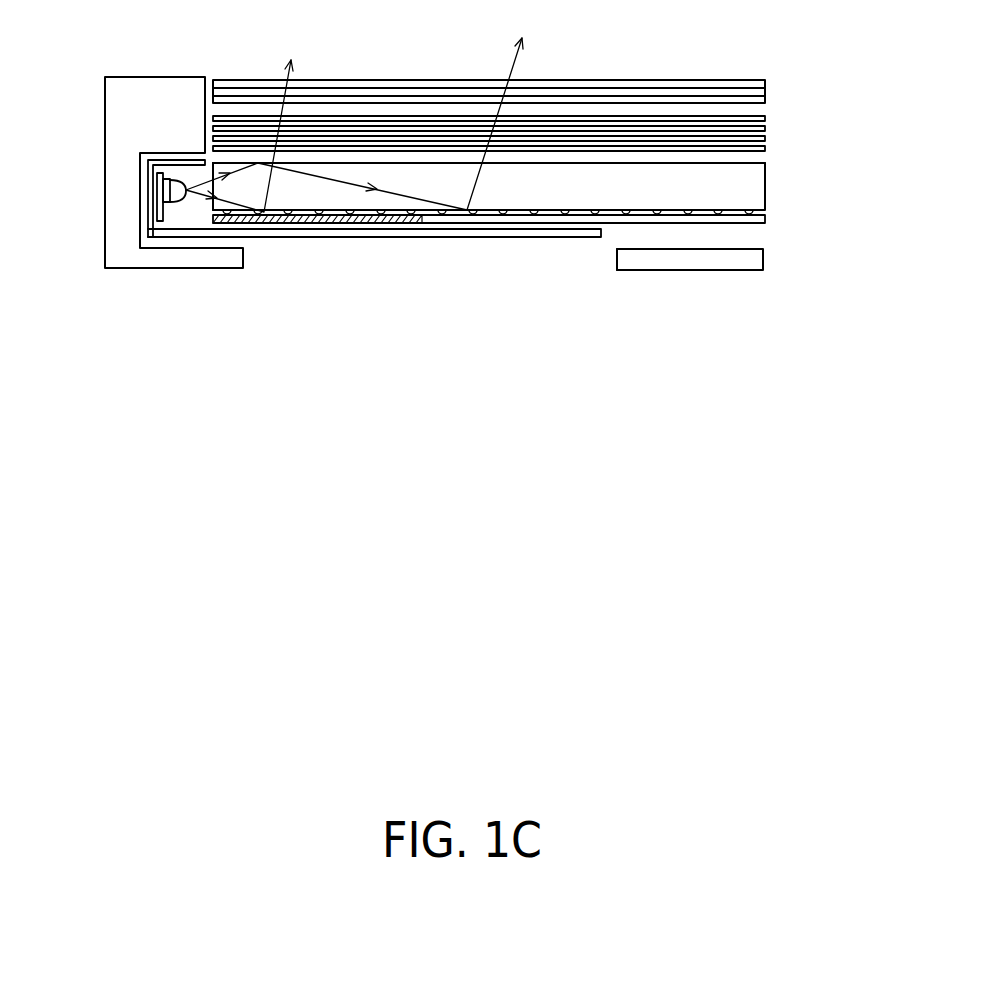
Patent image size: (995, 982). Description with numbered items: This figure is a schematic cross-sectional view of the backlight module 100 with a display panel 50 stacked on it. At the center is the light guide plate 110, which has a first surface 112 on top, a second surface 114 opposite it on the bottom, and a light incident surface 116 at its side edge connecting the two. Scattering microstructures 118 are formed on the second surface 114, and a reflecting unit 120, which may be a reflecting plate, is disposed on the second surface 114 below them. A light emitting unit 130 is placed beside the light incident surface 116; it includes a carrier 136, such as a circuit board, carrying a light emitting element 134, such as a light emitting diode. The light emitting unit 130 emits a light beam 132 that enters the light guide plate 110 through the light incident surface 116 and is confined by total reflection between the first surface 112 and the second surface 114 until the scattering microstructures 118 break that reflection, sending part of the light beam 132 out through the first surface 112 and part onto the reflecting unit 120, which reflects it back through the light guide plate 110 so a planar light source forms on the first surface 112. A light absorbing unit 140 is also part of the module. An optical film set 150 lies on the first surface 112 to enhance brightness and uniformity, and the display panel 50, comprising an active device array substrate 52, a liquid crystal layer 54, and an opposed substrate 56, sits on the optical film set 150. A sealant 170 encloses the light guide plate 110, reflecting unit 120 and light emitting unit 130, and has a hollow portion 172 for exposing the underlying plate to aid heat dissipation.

The backlight module 100 is at (785, 379).
The light guide plate 110 is at (765, 185).
The first surface 112 is at (752, 159).
The second surface 114 is at (457, 213).
The light incident surface 116 is at (203, 203).
The scattering microstructures 118 is at (412, 218).
The reflecting unit 120 is at (765, 220).
The light emitting unit 130 is at (144, 278).
The light beam 132 is at (193, 168).
The light emitting element 134 is at (168, 204).
The carrier 136 is at (158, 224).
The light absorbing unit 140 is at (321, 224).
The optical film set 150 is at (788, 117).
The sealant 170 is at (120, 140).
The hollow portion 172 is at (608, 254).
The display panel 50 is at (536, 61).
The active device array substrate 52 is at (765, 99).
The liquid crystal layer 54 is at (765, 91).
The opposed substrate 56 is at (765, 84).